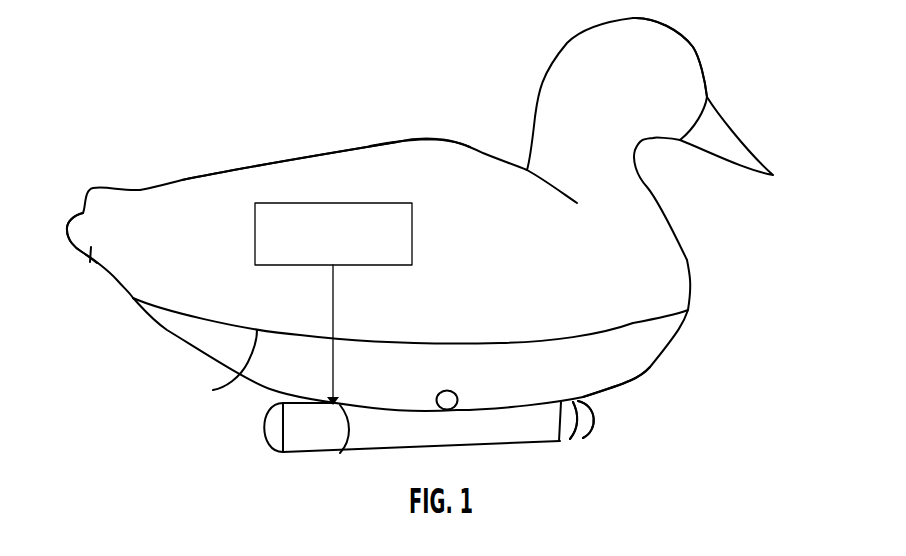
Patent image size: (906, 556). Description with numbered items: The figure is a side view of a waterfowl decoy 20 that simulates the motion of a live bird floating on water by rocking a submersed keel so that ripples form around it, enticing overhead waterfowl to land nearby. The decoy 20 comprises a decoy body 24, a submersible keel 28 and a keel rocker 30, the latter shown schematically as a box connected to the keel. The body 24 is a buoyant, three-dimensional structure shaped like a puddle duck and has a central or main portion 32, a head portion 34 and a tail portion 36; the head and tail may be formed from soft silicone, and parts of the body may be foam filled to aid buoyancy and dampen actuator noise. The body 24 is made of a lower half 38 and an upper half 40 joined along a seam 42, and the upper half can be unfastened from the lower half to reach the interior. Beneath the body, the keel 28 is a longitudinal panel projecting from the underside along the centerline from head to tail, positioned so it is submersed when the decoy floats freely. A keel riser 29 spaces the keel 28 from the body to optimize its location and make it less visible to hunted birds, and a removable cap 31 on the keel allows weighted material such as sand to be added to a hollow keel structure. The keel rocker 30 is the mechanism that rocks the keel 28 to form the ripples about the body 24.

The waterfowl decoy 20 is at (198, 71).
The decoy body 24 is at (181, 173).
The submersible keel 28 is at (292, 447).
The keel riser 29 is at (345, 450).
The keel rocker 30 is at (288, 202).
The cap 31 is at (583, 425).
The central or main portion 32 is at (432, 138).
The head portion 34 is at (692, 47).
The tail portion 36 is at (90, 262).
The lower half 38 is at (634, 388).
The upper half 40 is at (394, 135).
The seam 42 is at (222, 368).